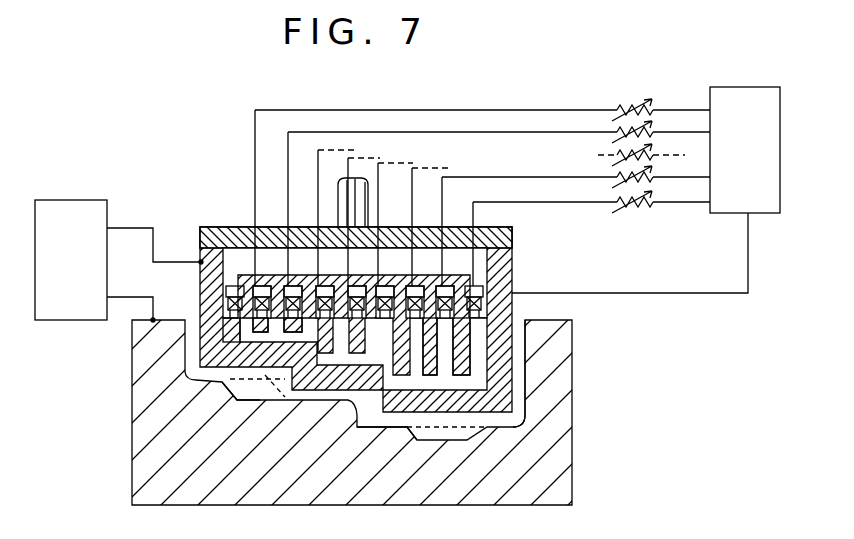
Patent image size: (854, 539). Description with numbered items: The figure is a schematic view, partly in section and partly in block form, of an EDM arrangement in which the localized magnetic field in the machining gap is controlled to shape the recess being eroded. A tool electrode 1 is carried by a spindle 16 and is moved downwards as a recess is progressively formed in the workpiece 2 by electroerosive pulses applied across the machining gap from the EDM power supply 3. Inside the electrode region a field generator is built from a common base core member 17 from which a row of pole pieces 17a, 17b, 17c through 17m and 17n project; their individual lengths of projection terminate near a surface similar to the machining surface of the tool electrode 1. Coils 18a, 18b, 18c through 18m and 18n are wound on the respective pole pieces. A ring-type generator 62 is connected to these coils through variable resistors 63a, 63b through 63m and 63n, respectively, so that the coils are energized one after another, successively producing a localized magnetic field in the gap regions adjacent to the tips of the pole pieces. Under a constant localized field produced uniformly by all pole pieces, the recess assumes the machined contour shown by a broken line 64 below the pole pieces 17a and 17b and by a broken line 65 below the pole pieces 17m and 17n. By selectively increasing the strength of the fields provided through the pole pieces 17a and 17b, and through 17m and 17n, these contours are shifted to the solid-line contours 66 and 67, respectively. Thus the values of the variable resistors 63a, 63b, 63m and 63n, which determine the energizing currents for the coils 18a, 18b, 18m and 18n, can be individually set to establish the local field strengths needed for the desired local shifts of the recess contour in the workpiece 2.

The tool electrode 1 is at (510, 352).
The workpiece 2 is at (568, 413).
The EDM power supply 3 is at (86, 208).
The spindle 16 is at (370, 200).
The common base core member 17 is at (248, 273).
The pole piece 17a is at (243, 336).
The pole piece 17b is at (267, 333).
The pole piece 17c is at (310, 345).
The pole piece 17m is at (428, 330).
The pole piece 17n is at (475, 378).
The coil 18a is at (233, 292).
The coil 18b is at (265, 286).
The coil 18c is at (294, 286).
The coil 18m is at (422, 286).
The coil 18n is at (450, 286).
The ring-type generator 62 is at (762, 92).
The variable resistor 63a is at (626, 110).
The variable resistor 63b is at (617, 124).
The variable resistor 63m is at (623, 175).
The variable resistor 63n is at (633, 207).
The broken-line machined contour 64 is at (262, 423).
The broken-line machined contour 65 is at (433, 432).
The shifted machined contour 66 is at (258, 403).
The shifted machined contour 67 is at (392, 436).